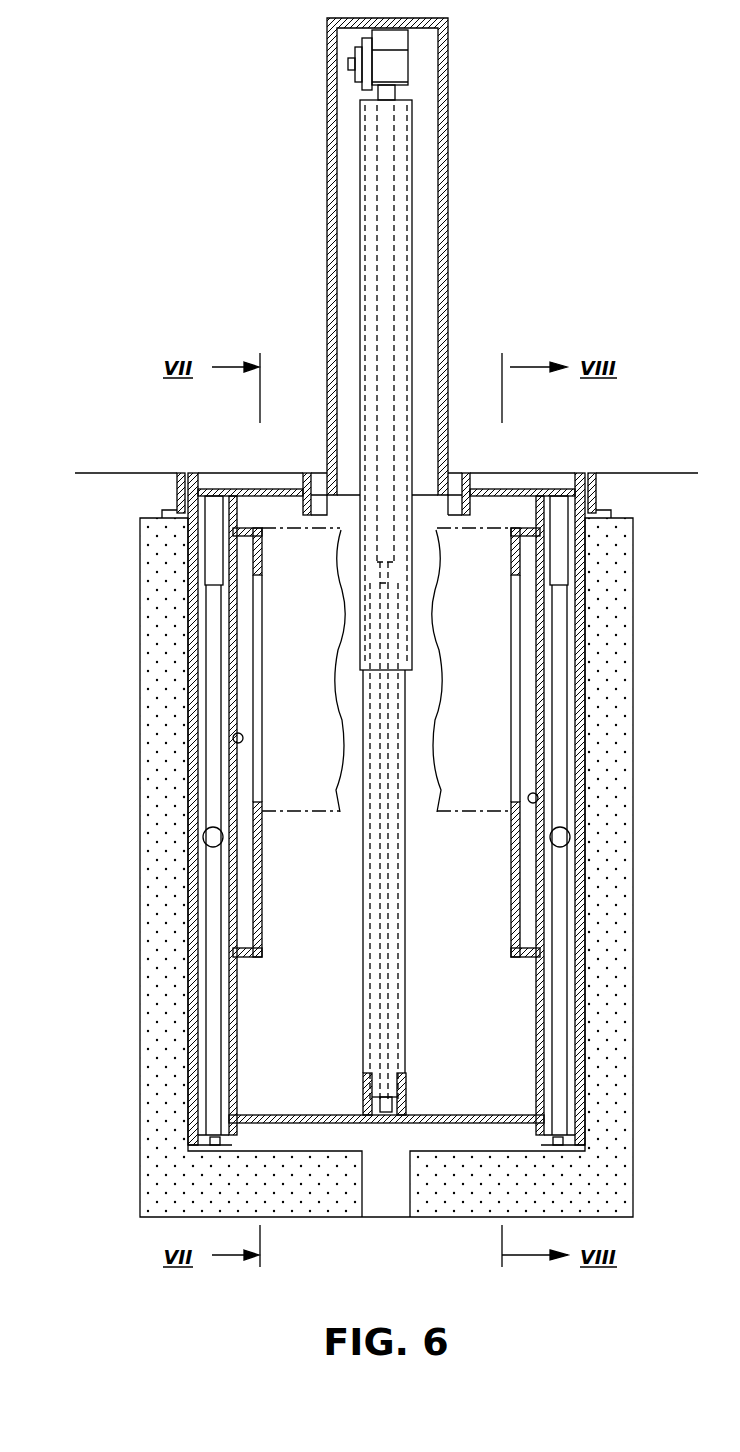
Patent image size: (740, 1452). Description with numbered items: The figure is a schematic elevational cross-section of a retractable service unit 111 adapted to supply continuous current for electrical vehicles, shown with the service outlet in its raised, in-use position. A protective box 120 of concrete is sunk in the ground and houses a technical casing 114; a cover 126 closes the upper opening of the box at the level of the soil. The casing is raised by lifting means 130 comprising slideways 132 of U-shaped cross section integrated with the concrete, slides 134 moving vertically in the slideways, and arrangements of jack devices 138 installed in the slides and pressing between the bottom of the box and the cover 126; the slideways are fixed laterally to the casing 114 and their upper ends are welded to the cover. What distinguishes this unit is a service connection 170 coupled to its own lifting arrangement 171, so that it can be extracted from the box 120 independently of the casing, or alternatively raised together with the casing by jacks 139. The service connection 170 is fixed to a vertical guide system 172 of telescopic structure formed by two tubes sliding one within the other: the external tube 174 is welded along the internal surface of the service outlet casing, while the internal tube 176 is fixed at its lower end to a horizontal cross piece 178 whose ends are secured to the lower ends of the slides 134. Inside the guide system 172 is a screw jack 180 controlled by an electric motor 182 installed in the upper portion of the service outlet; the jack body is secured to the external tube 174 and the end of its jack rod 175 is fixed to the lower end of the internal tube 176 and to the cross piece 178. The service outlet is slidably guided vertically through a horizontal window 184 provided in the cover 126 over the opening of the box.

The service unit 111 is at (216, 466).
The technical casing 114 is at (470, 783).
The protective box 120 is at (165, 545).
The cover 126 is at (525, 490).
The lifting means 130 is at (192, 697).
The slideways 132 is at (190, 1103).
The slides 134 is at (232, 738).
The jack devices 138 is at (216, 627).
The jacks 139 is at (213, 797).
The service connection 170 is at (447, 198).
The lifting arrangement 171 is at (406, 302).
The vertical guide system 172 is at (361, 843).
The external tube 174 is at (366, 297).
The jack rod 175 is at (386, 1112).
The internal tube 176 is at (398, 1102).
The horizontal cross piece 178 is at (287, 1119).
The jack 180 is at (385, 346).
The electric motor 182 is at (395, 66).
The horizontal window 184 is at (316, 470).